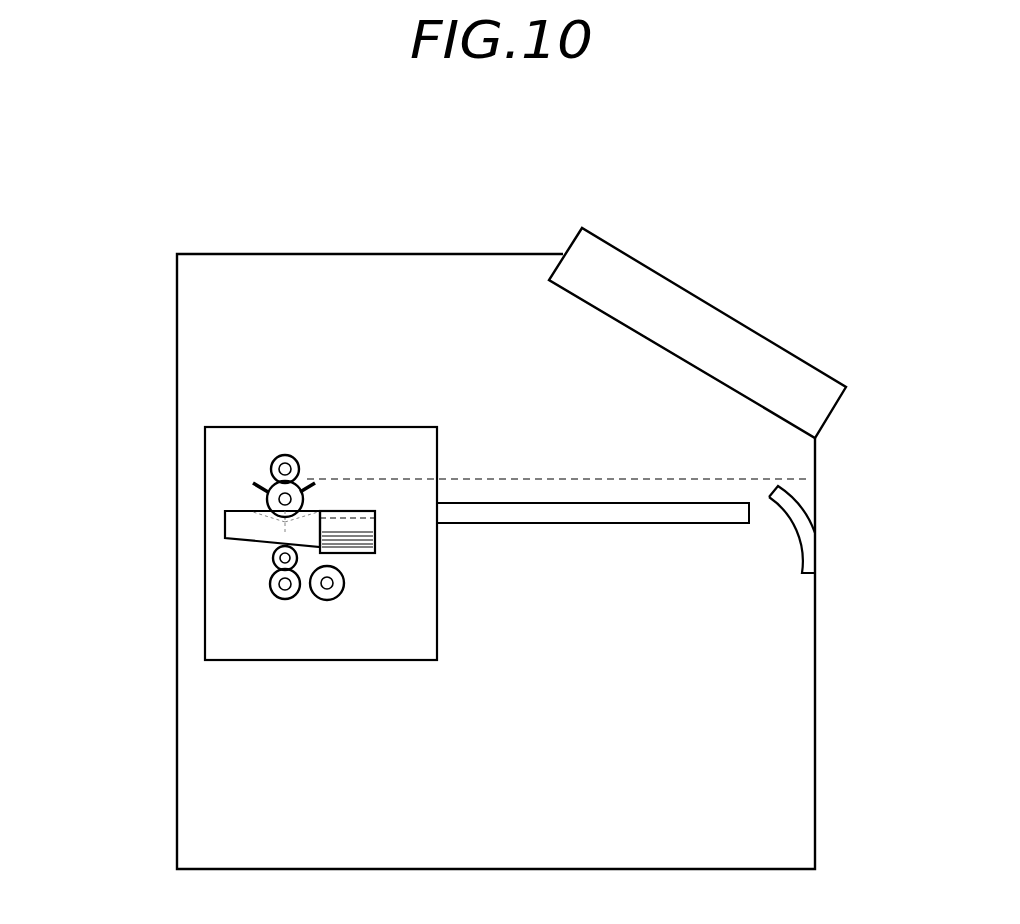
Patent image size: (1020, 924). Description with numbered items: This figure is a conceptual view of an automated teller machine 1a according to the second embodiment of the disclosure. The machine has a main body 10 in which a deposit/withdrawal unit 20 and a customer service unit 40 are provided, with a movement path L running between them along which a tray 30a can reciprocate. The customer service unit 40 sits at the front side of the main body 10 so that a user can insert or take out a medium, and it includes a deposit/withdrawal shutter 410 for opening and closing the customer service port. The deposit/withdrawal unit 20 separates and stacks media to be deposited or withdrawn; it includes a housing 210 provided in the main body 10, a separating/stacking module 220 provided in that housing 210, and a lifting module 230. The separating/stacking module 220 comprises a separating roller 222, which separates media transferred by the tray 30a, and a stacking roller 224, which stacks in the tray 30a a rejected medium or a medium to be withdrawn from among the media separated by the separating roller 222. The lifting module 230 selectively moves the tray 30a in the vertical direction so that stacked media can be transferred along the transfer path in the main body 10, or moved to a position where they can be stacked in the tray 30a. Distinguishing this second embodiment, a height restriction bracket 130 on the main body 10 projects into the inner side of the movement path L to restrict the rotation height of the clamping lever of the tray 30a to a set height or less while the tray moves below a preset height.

The automated teller machine 1a is at (580, 134).
The main body 10 is at (382, 254).
The deposit/withdrawal unit 20 is at (263, 403).
The tray 30a is at (349, 511).
The customer service unit 40 is at (831, 493).
The height restriction bracket 130 is at (590, 515).
The housing 210 is at (285, 660).
The separating/stacking module 220 is at (118, 483).
The separating roller 222 is at (325, 592).
The stacking roller 224 is at (271, 469).
The lifting module 230 is at (360, 553).
The deposit/withdrawal shutter 410 is at (803, 533).
The movement path L is at (735, 575).